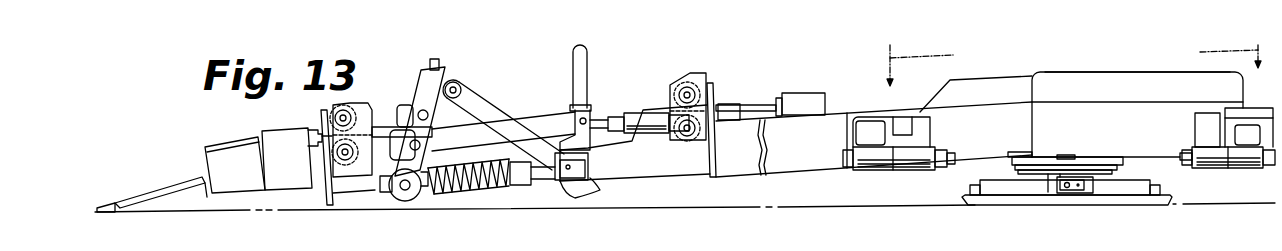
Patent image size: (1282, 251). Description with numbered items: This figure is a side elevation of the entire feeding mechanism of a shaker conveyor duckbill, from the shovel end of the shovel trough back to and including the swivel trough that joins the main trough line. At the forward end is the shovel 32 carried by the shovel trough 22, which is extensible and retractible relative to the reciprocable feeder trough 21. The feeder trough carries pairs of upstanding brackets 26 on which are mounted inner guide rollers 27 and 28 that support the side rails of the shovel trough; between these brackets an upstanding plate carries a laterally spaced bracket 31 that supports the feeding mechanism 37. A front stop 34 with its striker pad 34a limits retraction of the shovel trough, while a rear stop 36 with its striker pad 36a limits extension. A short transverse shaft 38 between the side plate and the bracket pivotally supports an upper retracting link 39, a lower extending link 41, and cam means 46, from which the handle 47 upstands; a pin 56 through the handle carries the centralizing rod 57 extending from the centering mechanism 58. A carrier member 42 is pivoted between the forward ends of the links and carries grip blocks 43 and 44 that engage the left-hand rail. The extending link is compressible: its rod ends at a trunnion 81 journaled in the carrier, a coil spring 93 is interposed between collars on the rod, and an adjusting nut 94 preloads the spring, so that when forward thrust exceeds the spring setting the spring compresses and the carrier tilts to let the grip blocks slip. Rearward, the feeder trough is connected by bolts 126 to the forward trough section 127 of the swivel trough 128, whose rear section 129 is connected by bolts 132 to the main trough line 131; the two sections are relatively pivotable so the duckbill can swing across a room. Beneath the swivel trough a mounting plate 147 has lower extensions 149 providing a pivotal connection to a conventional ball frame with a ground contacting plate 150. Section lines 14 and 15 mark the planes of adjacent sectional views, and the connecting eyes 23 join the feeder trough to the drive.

The section line 14 is at (1074, 57).
The section line 15 is at (859, 244).
The feeder trough 21 is at (838, 108).
The shovel trough 22 is at (503, 131).
The connecting eyes 23 is at (860, 168).
The upstanding brackets 26 is at (338, 108).
The inner guide rollers 27 is at (356, 116).
The inner guide rollers 28 is at (333, 170).
The bracket 31 is at (620, 176).
The shovel 32 is at (221, 180).
The front stop 34 is at (277, 135).
The striker pad 34a is at (287, 159).
The rear stop 36 is at (804, 94).
The striker pad 36a is at (778, 98).
The feeding mechanism 37 is at (461, 85).
The transverse shaft 38 is at (568, 180).
The retracting link 39 is at (493, 113).
The extending link 41 is at (526, 185).
The carrier member 42 is at (420, 82).
The grip block 43 is at (405, 128).
The grip block 44 is at (398, 142).
The cam means 46 is at (572, 140).
The handle 47 is at (580, 62).
The pin 56 is at (587, 118).
The centralizing rod 57 is at (606, 119).
The centering mechanism 58 is at (631, 110).
The trunnion 81 is at (406, 190).
The coil spring 93 is at (470, 186).
The adjusting nut 94 is at (386, 193).
The bolts 126 is at (946, 168).
The forward trough section 127 is at (965, 86).
The swivel trough 128 is at (1033, 70).
The rear section 129 is at (1148, 87).
The main trough line 131 is at (1263, 112).
The bolts 132 is at (1195, 166).
The mounting plate 147 is at (1025, 160).
The lower extensions 149 is at (1054, 184).
The ground contacting plate 150 is at (975, 204).